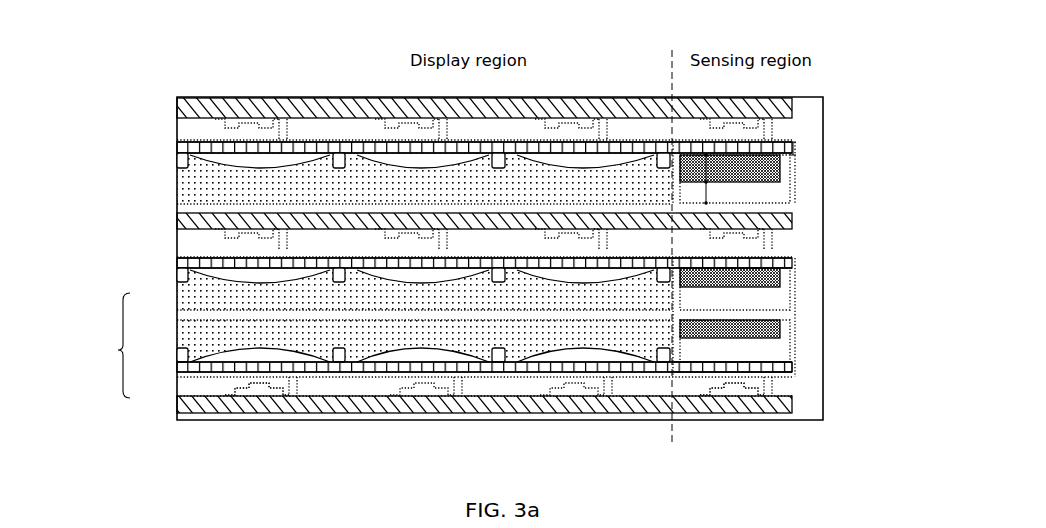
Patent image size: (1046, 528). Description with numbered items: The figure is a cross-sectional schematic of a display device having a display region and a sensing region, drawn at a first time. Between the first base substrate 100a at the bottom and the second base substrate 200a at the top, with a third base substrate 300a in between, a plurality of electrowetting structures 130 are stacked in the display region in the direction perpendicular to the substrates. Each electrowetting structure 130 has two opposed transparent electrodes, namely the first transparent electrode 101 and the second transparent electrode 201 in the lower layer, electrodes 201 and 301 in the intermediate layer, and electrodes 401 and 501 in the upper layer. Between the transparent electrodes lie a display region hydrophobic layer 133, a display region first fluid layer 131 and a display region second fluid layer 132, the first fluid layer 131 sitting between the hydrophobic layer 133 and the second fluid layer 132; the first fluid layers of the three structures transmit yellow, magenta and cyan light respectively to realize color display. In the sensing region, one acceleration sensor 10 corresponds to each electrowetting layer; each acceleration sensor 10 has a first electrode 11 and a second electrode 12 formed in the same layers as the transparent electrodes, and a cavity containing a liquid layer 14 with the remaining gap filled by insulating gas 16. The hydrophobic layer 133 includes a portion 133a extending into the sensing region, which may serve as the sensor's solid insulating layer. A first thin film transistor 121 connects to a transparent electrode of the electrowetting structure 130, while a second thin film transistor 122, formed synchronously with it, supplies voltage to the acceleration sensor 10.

The second base substrate 200a is at (792, 105).
The transparent electrode 501 is at (178, 143).
The transparent electrode 401 is at (178, 207).
The third base substrate 300a is at (792, 225).
The transparent electrode 301 is at (178, 255).
The second transparent electrode 201 is at (232, 313).
The display region second fluid layer 132 is at (222, 333).
The display region first fluid layer 131 is at (227, 358).
The display region hydrophobic layer 133 is at (180, 367).
The electrowetting structure 130 is at (109, 345).
The first transparent electrode 101 is at (200, 383).
The first thin film transistor 121 is at (247, 393).
The second thin film transistor 122 is at (727, 393).
The first base substrate 100a is at (790, 408).
The acceleration sensor 10 is at (792, 202).
The second electrode 12 is at (780, 313).
The liquid layer 14 is at (780, 350).
The insulating gas 16 is at (780, 326).
The portion of the display region hydrophobic layer extending to the sensing region 133a is at (790, 368).
The first electrode 11 is at (780, 378).